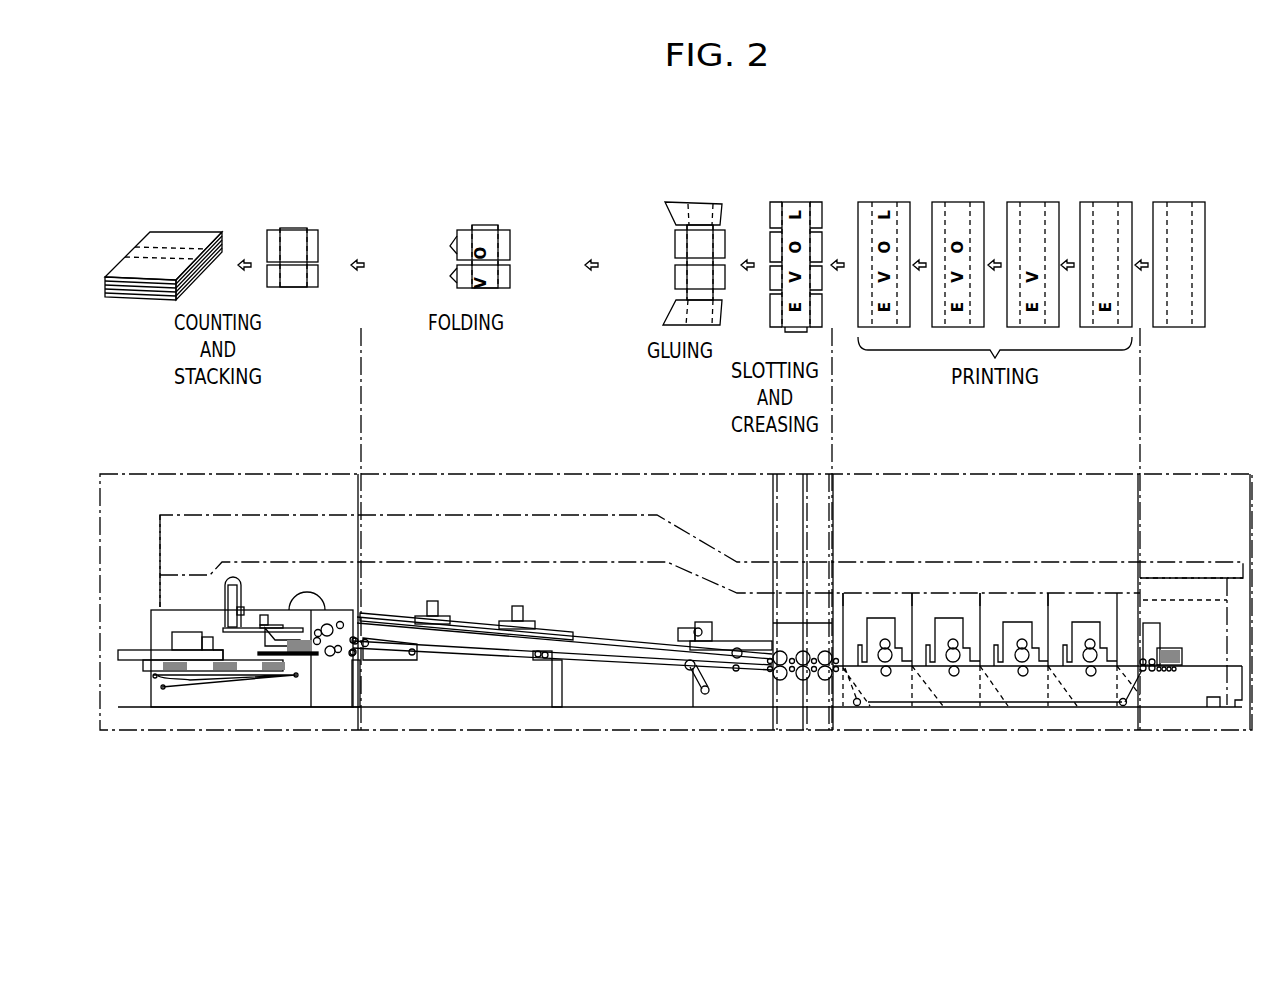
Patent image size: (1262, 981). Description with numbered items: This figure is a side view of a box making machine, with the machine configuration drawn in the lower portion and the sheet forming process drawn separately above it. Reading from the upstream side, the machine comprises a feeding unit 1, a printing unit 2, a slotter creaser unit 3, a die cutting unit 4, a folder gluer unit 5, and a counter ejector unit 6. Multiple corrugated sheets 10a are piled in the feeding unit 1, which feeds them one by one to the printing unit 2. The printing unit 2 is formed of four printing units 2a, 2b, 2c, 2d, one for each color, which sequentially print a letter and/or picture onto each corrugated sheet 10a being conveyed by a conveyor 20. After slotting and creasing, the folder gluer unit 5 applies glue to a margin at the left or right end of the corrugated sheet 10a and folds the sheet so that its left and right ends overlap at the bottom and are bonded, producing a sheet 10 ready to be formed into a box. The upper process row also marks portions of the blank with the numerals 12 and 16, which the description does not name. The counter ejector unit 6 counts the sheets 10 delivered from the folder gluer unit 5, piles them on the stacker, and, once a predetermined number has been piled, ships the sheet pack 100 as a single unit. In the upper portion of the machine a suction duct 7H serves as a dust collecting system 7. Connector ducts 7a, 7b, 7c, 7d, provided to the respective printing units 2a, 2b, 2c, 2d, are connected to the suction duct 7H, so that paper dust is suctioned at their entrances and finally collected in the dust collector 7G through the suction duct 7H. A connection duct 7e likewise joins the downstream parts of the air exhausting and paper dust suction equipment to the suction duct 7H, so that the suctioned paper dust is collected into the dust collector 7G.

The feeding unit 1 is at (1203, 736).
The printing unit 2 is at (992, 736).
The printing unit 2a is at (1085, 620).
The printing unit 2b is at (1017, 620).
The printing unit 2c is at (947, 618).
The printing unit 2d is at (878, 618).
The slotter creaser unit 3 is at (827, 738).
The die cutting unit 4 is at (789, 738).
The folder gluer unit 5 is at (572, 736).
The counter ejector unit 6 is at (237, 736).
The dust collecting system 7 is at (1168, 553).
The connector duct 7a is at (1060, 603).
The connector duct 7b is at (990, 603).
The connector duct 7c is at (923, 603).
The connector duct 7d is at (853, 603).
The connection duct 7e is at (1130, 603).
The dust collector 7G is at (172, 592).
The suction duct 7H is at (486, 514).
The sheet ready to be formed into a box 10 is at (292, 228).
The corrugated sheet 10a is at (1180, 215).
The folding flap 12 is at (667, 205).
The side panel 16 is at (677, 243).
The conveyor 20 is at (1094, 720).
The sheet pack 100 is at (168, 218).